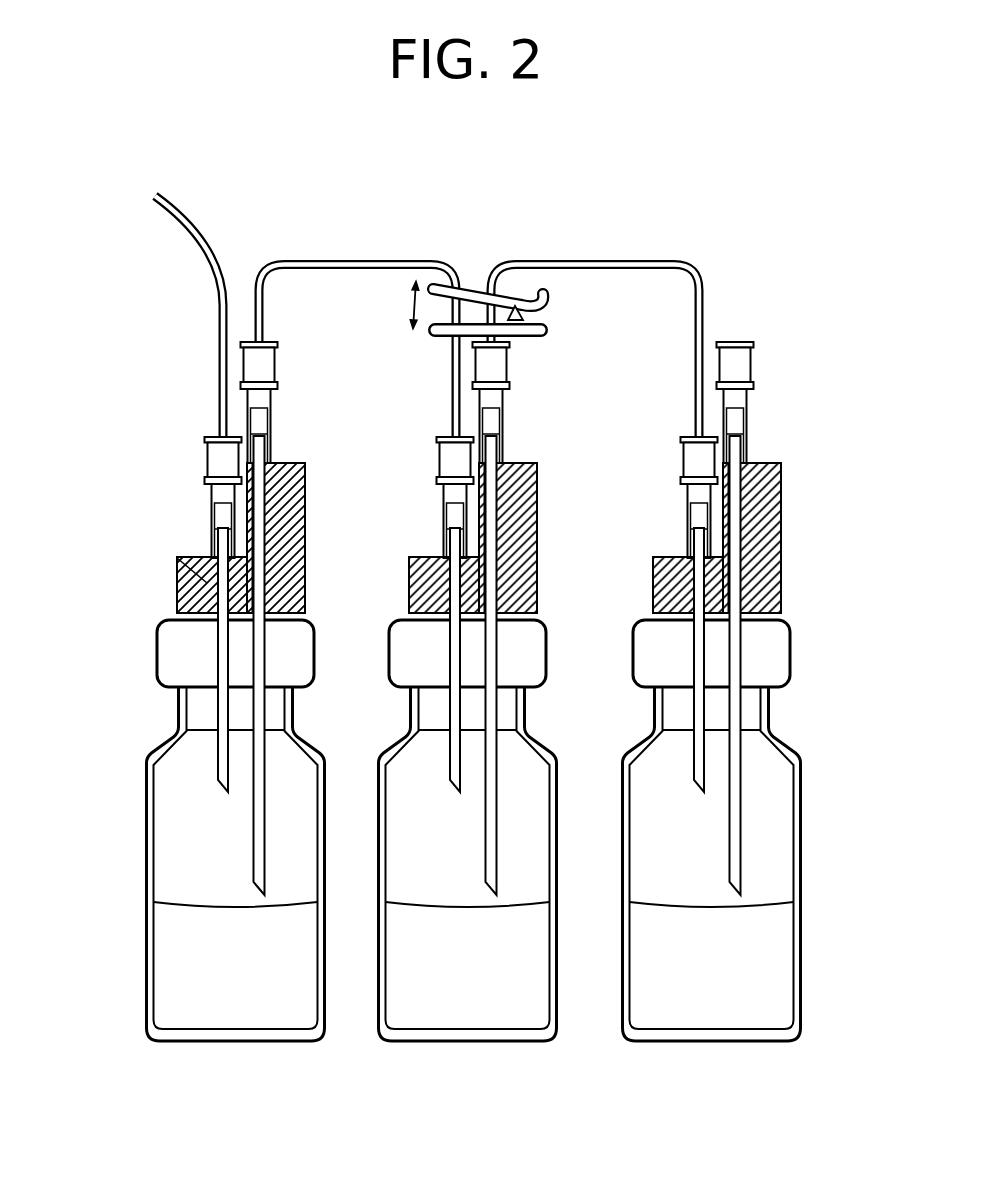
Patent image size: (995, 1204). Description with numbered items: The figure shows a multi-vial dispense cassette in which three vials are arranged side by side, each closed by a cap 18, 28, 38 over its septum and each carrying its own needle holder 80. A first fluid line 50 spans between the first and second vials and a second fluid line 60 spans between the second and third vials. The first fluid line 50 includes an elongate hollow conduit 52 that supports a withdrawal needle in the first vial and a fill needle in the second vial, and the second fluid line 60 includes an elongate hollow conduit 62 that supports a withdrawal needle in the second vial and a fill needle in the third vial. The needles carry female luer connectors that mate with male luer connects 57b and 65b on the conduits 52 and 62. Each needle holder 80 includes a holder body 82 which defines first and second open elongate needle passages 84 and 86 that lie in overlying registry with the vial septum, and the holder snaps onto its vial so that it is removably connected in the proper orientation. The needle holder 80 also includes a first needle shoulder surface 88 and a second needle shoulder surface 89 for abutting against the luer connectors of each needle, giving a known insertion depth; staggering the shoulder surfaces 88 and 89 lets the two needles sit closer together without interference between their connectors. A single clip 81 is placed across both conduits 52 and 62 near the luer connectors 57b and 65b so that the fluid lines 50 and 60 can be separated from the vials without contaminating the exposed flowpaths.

The cap 18 is at (156, 657).
The cap 28 is at (388, 648).
The cap 38 is at (633, 648).
The first fluid line 50 is at (353, 309).
The elongate hollow conduit 52 is at (291, 262).
The male luer connect 57b is at (438, 462).
The second fluid line 60 is at (603, 309).
The elongate hollow conduit 62 is at (678, 262).
The male luer connect 65b is at (510, 362).
The needle holder 80 is at (461, 545).
The clip 81 is at (428, 338).
The holder body 82 is at (178, 605).
The first needle passage 84 is at (177, 558).
The second needle passage 86 is at (305, 537).
The first needle shoulder surface 88 is at (196, 557).
The second needle shoulder surface 89 is at (287, 463).